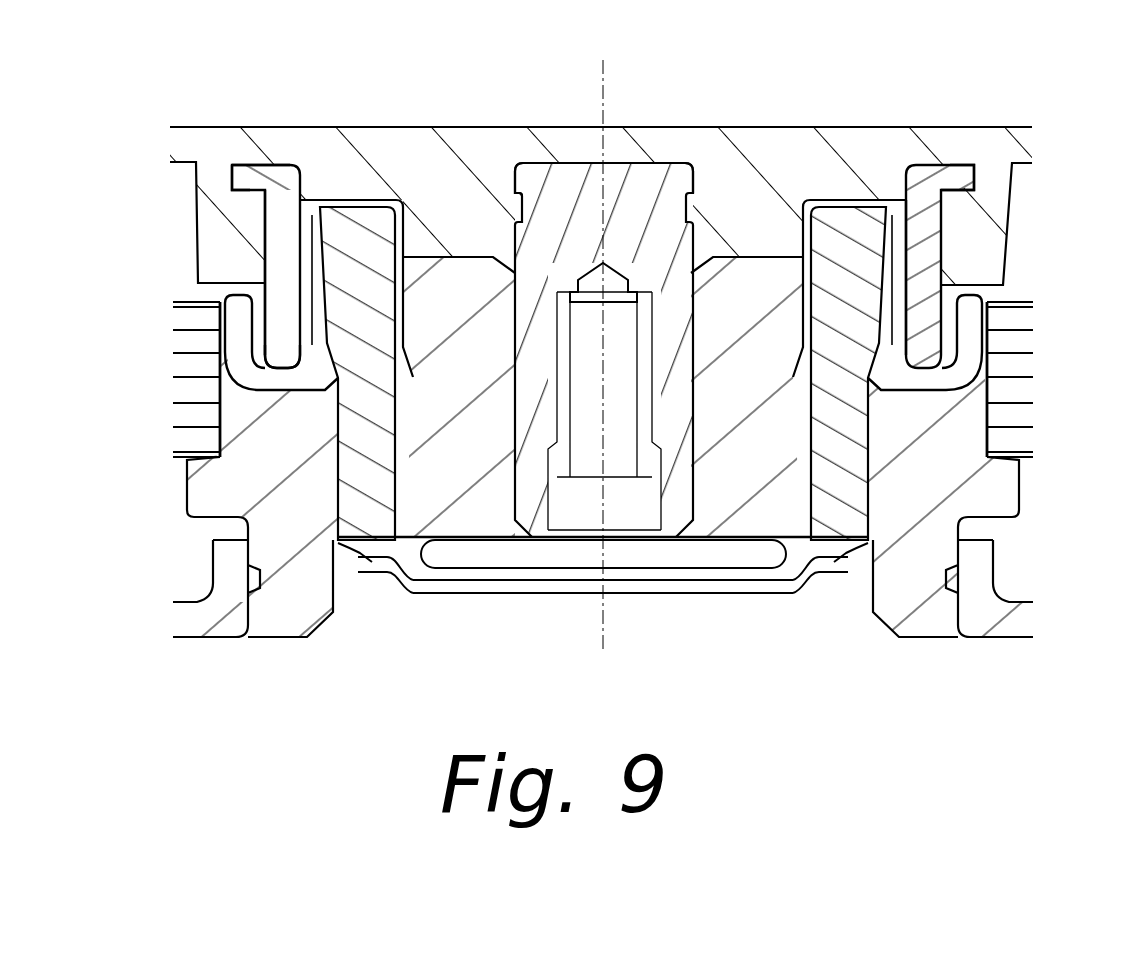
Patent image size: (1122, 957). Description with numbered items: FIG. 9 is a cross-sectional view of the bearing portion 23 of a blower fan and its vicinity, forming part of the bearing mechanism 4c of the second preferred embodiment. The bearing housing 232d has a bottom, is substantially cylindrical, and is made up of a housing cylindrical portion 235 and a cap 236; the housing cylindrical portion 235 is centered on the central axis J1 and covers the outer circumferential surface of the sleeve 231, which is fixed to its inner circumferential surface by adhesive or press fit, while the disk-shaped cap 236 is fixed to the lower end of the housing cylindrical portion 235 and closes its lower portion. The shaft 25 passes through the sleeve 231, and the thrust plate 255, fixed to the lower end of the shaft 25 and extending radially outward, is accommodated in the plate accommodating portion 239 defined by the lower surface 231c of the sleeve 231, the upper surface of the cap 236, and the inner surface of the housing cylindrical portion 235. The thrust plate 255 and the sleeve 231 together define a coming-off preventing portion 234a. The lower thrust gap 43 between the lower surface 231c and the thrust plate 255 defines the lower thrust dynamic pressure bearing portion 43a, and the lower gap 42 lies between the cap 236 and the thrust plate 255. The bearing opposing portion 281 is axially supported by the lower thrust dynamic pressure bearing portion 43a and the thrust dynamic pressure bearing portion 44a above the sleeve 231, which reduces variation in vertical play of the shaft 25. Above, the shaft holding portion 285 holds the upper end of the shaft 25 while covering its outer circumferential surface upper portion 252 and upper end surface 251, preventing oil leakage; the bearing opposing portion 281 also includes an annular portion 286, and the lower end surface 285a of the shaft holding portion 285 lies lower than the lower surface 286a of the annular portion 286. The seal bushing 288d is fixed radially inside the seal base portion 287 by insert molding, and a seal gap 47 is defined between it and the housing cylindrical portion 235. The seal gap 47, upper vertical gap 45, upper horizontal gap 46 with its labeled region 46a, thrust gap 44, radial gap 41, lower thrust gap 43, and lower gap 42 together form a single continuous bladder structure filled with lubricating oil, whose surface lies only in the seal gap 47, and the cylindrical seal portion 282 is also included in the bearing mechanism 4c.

The bearing mechanism 4c is at (716, 44).
The bearing opposing portion 281 is at (374, 48).
The annular portion 286 is at (347, 193).
The lower surface of the annular portion 286a is at (240, 163).
The shaft holding portion 285 is at (396, 212).
The lower end surface of the shaft holding portion 285a is at (330, 366).
The upper horizontal gap 46 is at (300, 237).
The cap plate top 46a is at (343, 197).
The thrust dynamic pressure bearing portion 44a is at (470, 252).
The upper vertical gap 45 is at (313, 290).
The seal gap 47 is at (250, 296).
The radial gap 41 is at (250, 431).
The lower thrust gap 43 is at (380, 432).
The lower gap 42 is at (521, 582).
The lower thrust dynamic pressure bearing portion 43a is at (472, 575).
The shaft 25 is at (609, 173).
The upper end surface of the shaft 251 is at (645, 160).
The outer circumferential surface upper portion of the shaft 252 is at (668, 183).
The thrust plate 255 is at (578, 553).
The central axis J1 is at (602, 125).
The sleeve 231 is at (768, 582).
The lower surface of the sleeve 231c is at (726, 541).
The plate accommodating portion 239 is at (407, 560).
The cap 236 is at (781, 600).
The coming-off preventing portion 234a is at (345, 575).
The housing cylindrical portion 235 is at (823, 515).
The bearing portion 23 is at (796, 700).
The cylindrical seal portion 282 is at (1038, 43).
The seal bushing 288d is at (923, 225).
The seal base portion 287 is at (977, 223).
The thrust gap 44 is at (815, 318).
The bearing housing 232d is at (940, 714).